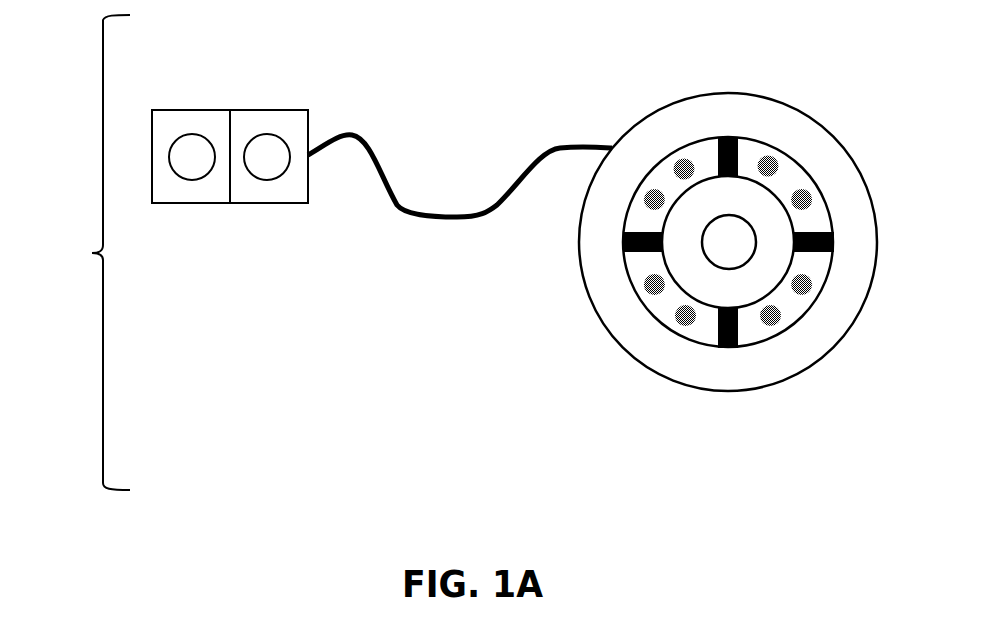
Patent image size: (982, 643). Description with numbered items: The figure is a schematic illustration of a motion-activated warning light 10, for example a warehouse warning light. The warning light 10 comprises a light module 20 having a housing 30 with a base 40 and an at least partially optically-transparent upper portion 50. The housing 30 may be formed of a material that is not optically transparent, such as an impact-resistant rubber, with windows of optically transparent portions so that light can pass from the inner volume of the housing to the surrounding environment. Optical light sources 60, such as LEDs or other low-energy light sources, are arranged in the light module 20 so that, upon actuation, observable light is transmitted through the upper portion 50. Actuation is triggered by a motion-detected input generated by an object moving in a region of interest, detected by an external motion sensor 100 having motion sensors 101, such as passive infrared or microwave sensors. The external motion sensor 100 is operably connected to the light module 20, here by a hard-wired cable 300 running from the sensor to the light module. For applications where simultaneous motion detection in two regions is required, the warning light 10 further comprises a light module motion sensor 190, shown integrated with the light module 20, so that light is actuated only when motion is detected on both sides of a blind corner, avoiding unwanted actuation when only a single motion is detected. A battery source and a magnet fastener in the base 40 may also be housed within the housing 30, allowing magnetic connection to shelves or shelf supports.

The warning light 10 is at (93, 253).
The external motion sensor 100 is at (272, 110).
The motion sensors 101 is at (198, 163).
The cable 300 is at (397, 210).
The light module 20 is at (700, 387).
The housing 30 is at (617, 308).
The base 40 is at (583, 238).
The upper portion 50 is at (790, 157).
The optical light sources 60 is at (683, 163).
The light module motion sensor 190 is at (752, 262).